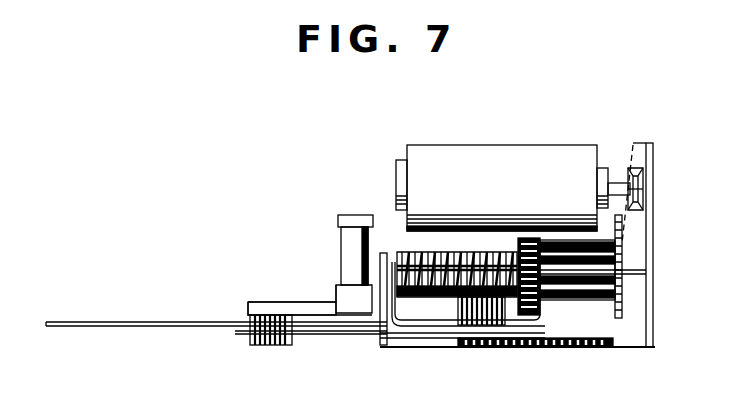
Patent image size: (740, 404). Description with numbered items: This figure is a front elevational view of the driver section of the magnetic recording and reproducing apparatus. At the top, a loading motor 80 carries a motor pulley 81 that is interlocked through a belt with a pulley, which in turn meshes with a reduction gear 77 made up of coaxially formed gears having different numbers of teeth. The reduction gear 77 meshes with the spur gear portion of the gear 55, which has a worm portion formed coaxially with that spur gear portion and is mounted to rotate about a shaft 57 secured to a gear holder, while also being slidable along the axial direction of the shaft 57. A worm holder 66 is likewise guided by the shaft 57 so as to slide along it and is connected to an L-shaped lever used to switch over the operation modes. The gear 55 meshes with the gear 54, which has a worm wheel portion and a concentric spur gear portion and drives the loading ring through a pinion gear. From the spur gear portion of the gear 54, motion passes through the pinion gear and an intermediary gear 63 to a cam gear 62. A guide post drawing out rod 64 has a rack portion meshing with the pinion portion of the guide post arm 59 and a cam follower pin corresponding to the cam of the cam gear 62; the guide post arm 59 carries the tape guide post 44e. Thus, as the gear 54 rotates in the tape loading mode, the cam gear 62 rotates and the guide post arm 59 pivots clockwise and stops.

The loading motor 80 is at (447, 153).
The motor pulley 81 is at (641, 183).
The shaft 57 is at (625, 275).
The reduction gear 77 is at (560, 303).
The gear 54 is at (428, 305).
The gear 55 is at (520, 315).
The intermediary gear 63 is at (468, 347).
The cam gear 62 is at (553, 347).
The tape guide post 44e is at (350, 248).
The guide post arm 59 is at (297, 312).
The guide post drawing out rod 64 is at (298, 333).
The worm holder 66 is at (181, 324).